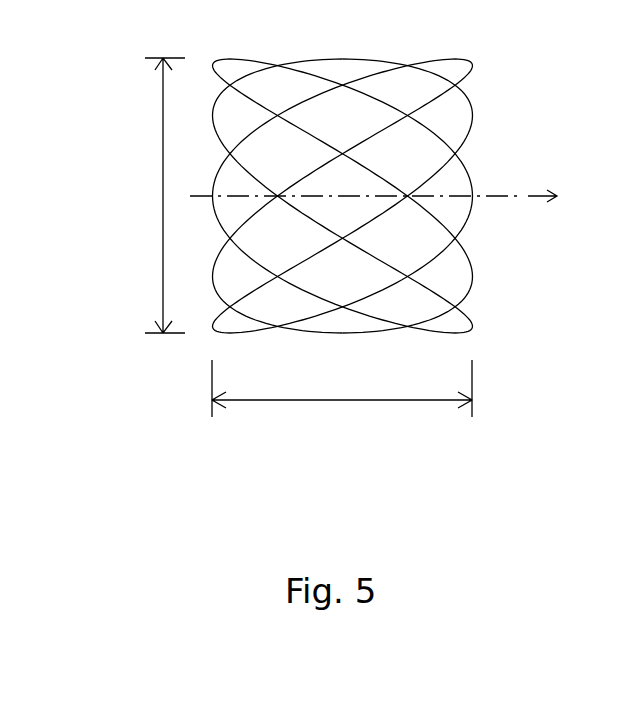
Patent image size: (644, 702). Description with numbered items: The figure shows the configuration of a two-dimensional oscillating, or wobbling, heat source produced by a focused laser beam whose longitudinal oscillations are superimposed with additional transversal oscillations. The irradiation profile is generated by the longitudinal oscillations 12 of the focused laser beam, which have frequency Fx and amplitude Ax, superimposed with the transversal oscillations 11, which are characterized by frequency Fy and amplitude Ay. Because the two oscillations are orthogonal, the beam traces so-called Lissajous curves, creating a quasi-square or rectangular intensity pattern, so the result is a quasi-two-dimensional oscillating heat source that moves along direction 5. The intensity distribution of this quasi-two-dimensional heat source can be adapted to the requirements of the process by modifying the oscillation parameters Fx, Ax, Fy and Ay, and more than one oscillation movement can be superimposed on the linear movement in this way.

The direction of movement of the heat source 5 is at (516, 184).
The transversal oscillations 11 is at (115, 195).
The longitudinal oscillations 12 is at (342, 402).